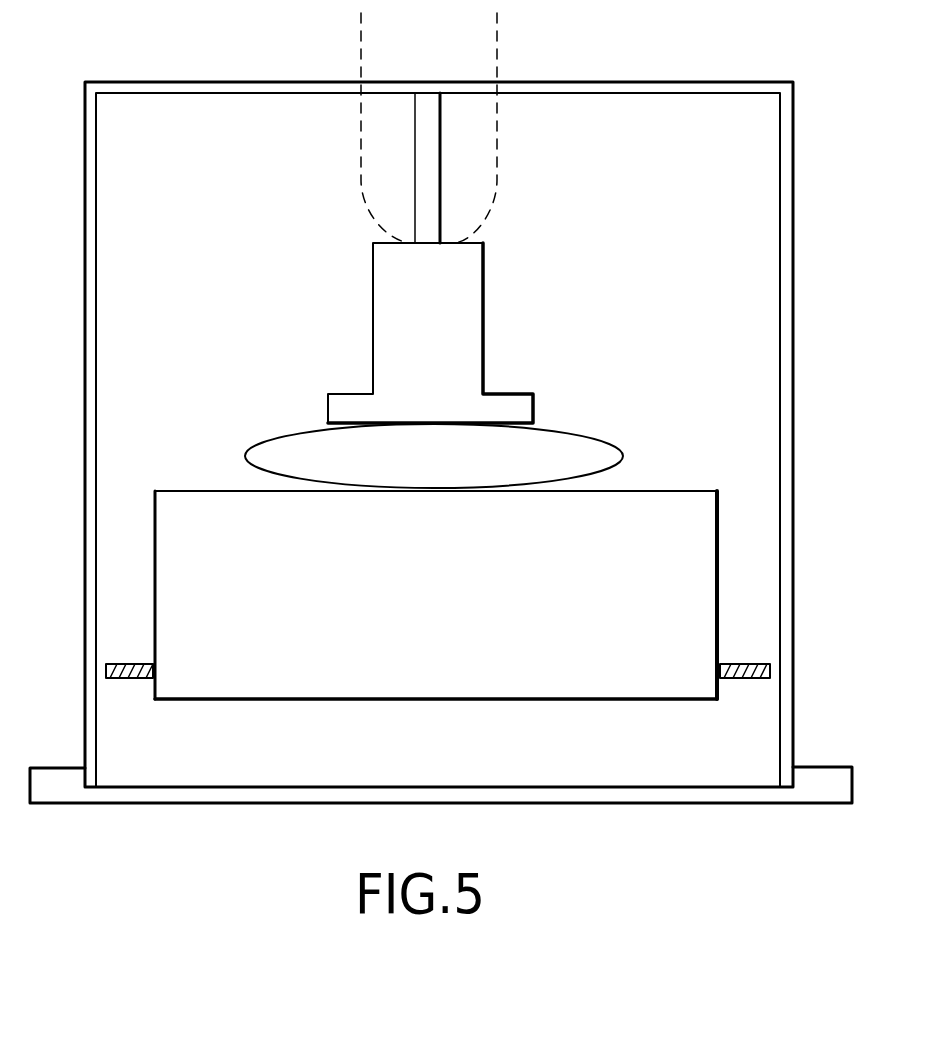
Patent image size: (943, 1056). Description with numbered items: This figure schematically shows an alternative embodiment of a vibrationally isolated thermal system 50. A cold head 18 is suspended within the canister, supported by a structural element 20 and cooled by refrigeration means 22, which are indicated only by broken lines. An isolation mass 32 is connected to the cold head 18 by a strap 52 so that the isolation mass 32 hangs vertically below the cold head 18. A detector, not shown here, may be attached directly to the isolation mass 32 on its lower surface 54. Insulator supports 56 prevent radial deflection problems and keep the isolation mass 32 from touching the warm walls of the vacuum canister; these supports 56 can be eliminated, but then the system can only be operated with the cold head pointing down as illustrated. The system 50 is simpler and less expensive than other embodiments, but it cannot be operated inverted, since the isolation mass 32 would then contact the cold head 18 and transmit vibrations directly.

The cold head 18 is at (463, 295).
The structural element 20 is at (430, 202).
The refrigeration means 22 is at (498, 42).
The isolation mass 32 is at (527, 662).
The vibrationally isolated thermal system 50 is at (562, 168).
The strap 52 is at (560, 430).
The lower surface 54 is at (313, 695).
The insulator supports 56 is at (128, 678).